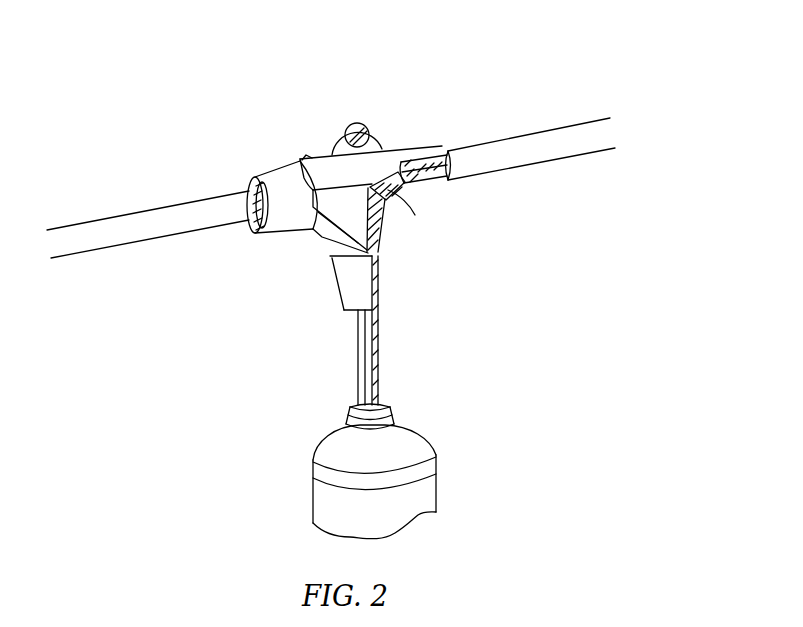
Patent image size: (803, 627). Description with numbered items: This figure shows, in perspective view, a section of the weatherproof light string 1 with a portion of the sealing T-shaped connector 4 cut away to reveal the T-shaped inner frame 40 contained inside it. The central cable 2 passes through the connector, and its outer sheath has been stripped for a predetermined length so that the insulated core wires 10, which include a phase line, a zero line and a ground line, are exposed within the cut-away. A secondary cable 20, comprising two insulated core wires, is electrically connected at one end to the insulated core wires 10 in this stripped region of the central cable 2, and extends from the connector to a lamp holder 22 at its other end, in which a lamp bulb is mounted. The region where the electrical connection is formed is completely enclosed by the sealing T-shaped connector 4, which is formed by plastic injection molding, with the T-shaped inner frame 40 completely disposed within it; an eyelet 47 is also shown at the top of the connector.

The weatherproof light string 1 is at (94, 94).
The central cable 2 is at (510, 137).
The sealing T-shaped connector 4 is at (265, 173).
The insulated core wires 10 is at (433, 138).
The secondary cable 20 is at (380, 343).
The lamp holder 22 is at (388, 190).
The T-shaped inner frame 40 is at (384, 232).
The eyelet ring 47 is at (345, 112).